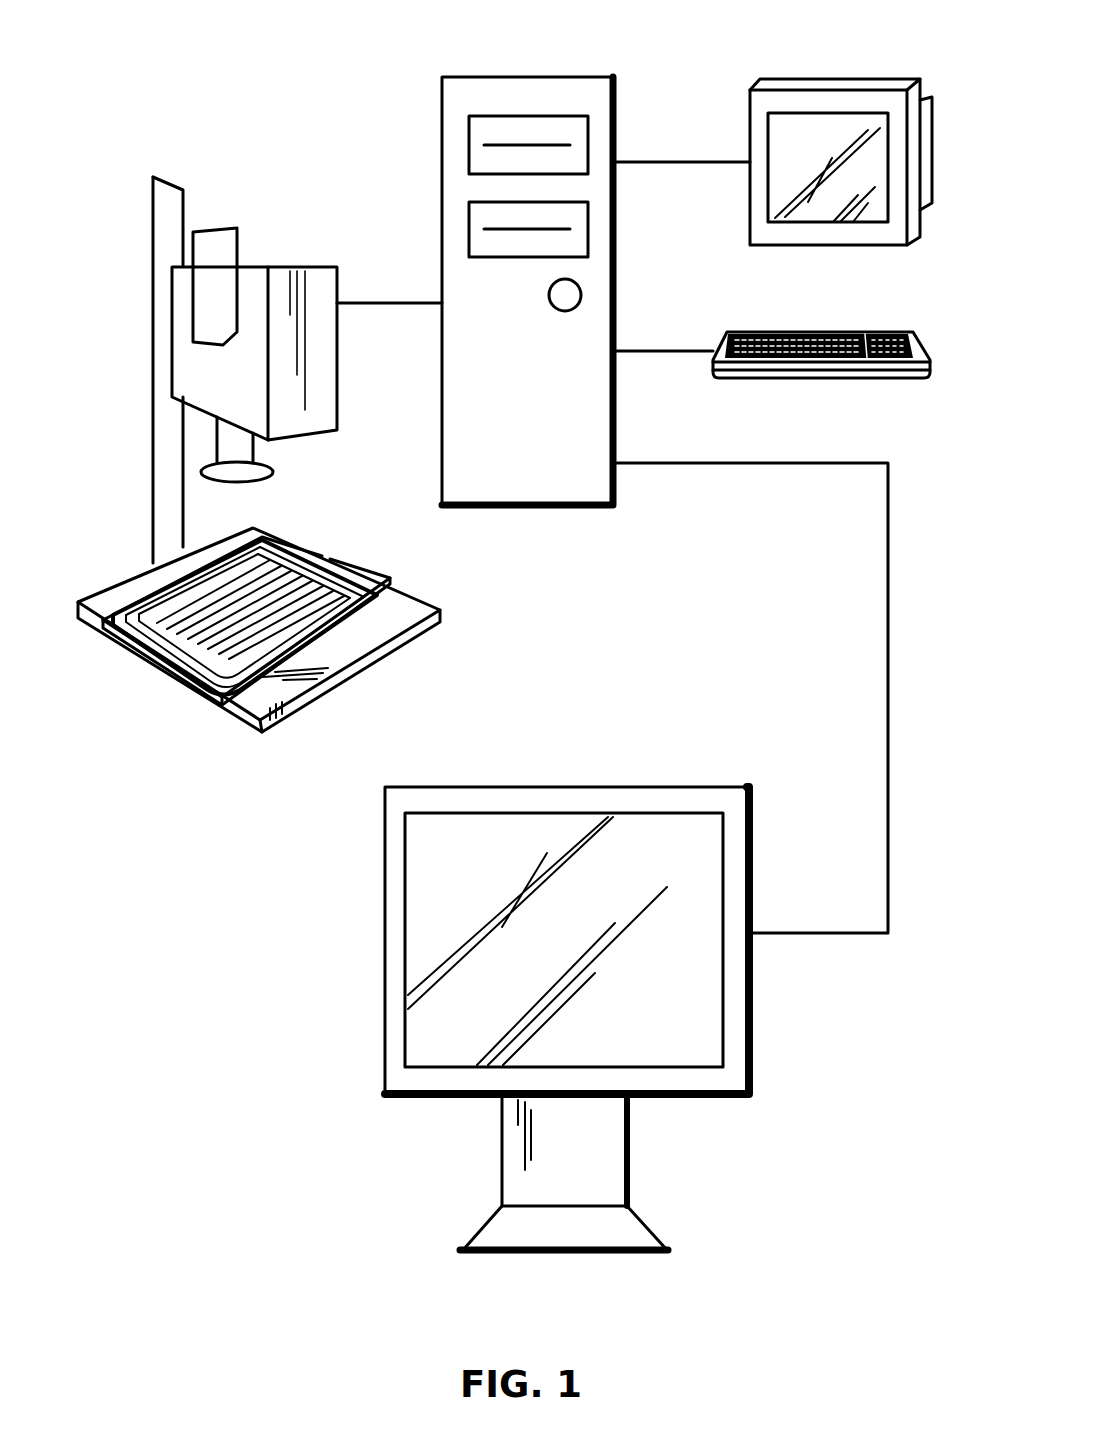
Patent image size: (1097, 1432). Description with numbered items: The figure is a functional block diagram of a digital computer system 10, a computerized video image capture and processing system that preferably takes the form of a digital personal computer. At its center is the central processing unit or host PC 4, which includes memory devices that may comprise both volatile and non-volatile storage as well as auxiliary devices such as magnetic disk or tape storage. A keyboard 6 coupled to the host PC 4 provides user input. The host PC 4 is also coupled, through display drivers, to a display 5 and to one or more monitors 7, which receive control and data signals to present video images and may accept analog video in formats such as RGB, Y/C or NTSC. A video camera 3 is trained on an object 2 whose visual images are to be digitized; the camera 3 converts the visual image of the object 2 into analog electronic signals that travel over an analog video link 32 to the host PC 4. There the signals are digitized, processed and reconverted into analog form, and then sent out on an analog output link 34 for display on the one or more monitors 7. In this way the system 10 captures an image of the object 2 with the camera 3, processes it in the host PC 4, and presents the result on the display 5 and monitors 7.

The object 2 is at (322, 557).
The video camera 3 is at (337, 400).
The host PC 4 is at (442, 103).
The display 5 is at (752, 1022).
The keyboard 6 is at (783, 332).
The monitor 7 is at (893, 79).
The digital computer system 10 is at (328, 1045).
The analog video link 32 is at (370, 303).
The analog output link 34 is at (664, 162).